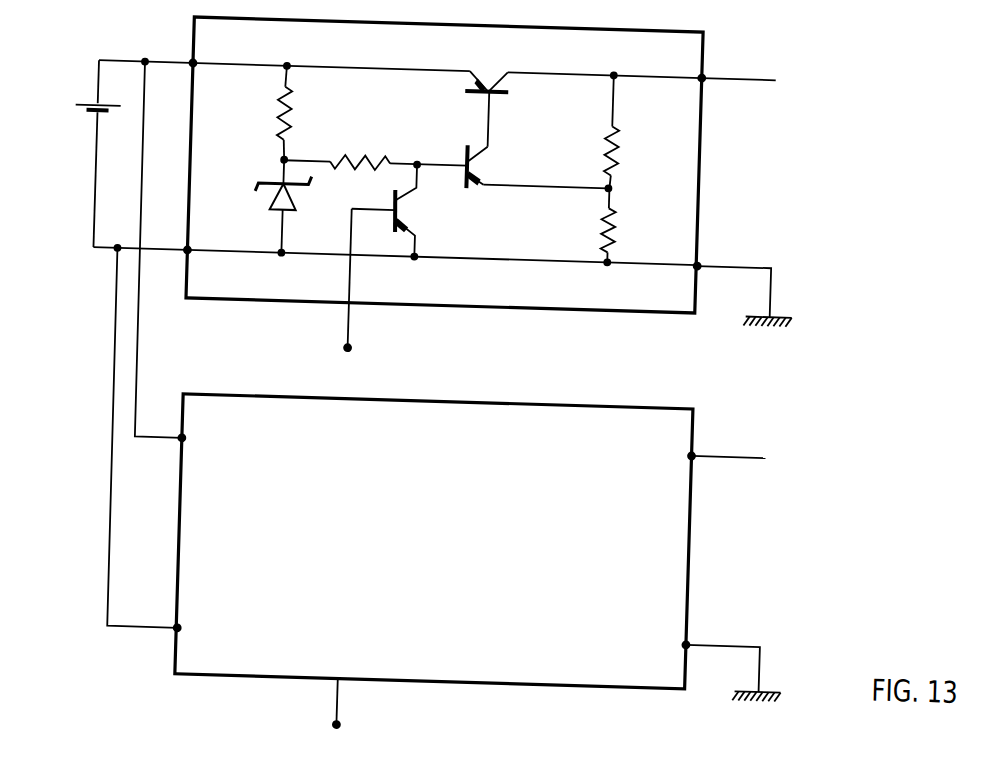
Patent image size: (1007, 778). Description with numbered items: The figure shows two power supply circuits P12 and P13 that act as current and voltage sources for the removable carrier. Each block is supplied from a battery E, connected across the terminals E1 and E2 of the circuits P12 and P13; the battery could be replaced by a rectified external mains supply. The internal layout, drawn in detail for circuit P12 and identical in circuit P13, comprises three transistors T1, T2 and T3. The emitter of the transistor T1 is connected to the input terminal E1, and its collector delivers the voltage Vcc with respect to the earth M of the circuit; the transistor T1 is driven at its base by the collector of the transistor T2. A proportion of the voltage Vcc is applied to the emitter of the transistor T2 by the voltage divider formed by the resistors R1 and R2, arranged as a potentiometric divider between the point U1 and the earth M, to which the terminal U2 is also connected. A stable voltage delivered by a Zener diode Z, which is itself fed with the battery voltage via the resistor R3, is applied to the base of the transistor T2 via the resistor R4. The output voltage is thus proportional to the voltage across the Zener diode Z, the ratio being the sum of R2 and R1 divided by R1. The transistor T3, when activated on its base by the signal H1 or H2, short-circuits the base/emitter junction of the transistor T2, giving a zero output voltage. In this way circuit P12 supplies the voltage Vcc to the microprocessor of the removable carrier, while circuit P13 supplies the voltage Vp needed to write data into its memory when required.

The power supply circuit P12 is at (444, 165).
The power supply circuit P13 is at (434, 541).
The battery E is at (86, 153).
The input terminal E1 is at (207, 243).
The input terminal E2 is at (205, 447).
The output point U1 is at (675, 257).
The output terminal U2 is at (666, 466).
The supply voltage Vcc is at (739, 63).
The programming voltage Vp is at (727, 443).
The earth M is at (738, 484).
The resistor R1 is at (625, 225).
The resistor R2 is at (627, 133).
The resistor R3 is at (300, 115).
The resistor R4 is at (376, 150).
The Zener diode Z is at (274, 205).
The transistor T1 is at (509, 87).
The transistor T2 is at (467, 182).
The transistor T3 is at (401, 212).
The control signal H1 is at (368, 286).
The control signal H2 is at (355, 709).